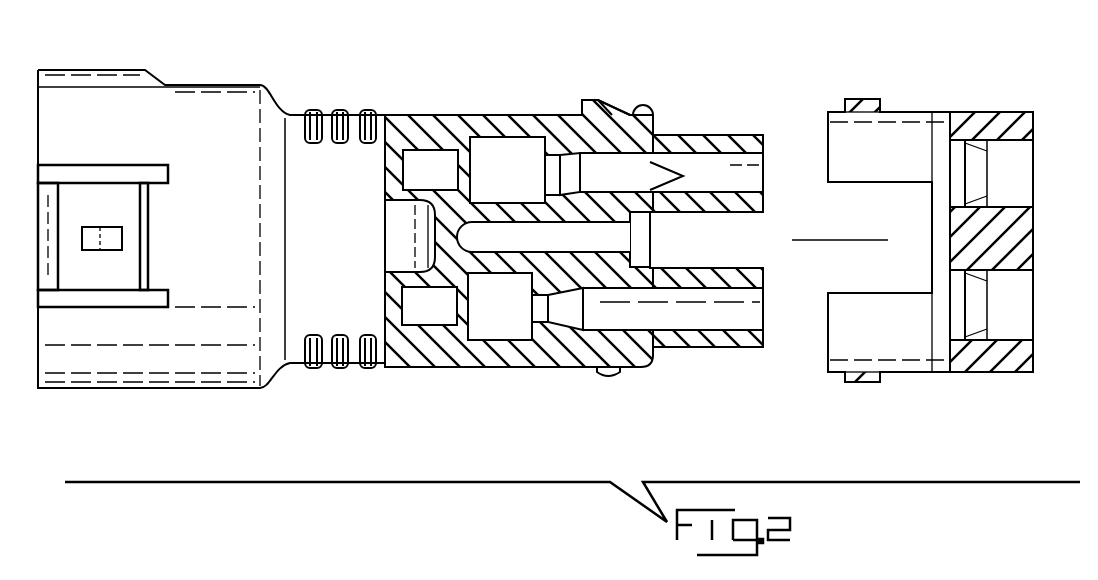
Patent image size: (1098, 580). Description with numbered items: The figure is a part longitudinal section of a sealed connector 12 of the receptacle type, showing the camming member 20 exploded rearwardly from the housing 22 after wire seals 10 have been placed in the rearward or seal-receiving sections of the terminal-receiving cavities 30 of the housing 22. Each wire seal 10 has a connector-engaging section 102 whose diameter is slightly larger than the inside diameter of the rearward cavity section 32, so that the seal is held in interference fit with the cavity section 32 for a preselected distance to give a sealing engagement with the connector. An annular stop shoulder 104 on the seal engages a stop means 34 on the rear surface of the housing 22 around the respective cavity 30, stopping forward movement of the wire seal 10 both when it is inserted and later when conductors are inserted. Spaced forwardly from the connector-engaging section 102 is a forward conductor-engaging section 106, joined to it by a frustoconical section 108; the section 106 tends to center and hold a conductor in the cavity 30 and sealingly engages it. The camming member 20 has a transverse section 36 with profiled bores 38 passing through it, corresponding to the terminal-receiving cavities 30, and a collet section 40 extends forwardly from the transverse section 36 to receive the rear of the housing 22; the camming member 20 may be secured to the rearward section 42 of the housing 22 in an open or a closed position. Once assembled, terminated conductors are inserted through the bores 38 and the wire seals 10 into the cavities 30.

The wire seal 10 is at (707, 133).
The connector 12 is at (519, 80).
The camming member 20 is at (835, 219).
The housing 22 is at (253, 87).
The terminal-receiving cavity 30 is at (512, 184).
The rearward cavity section 32 is at (548, 135).
The stop means 34 is at (686, 178).
The transverse section 36 is at (1033, 243).
The profiled bore 38 is at (953, 190).
The collet section 40 is at (840, 157).
The rearward section 42 is at (605, 370).
The connector-engaging section 102 is at (625, 138).
The annular stop shoulder 104 is at (623, 117).
The forward conductor-engaging section 106 is at (537, 192).
The frustoconical section 108 is at (585, 238).